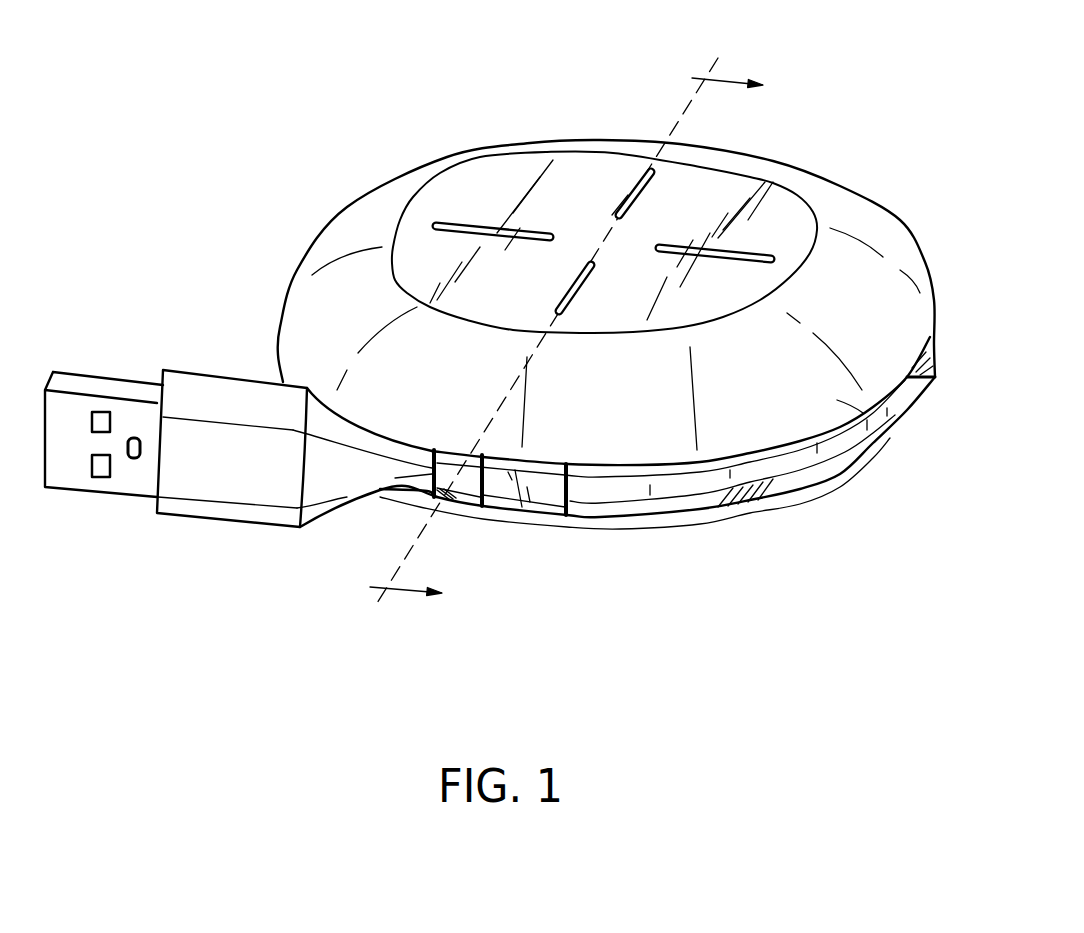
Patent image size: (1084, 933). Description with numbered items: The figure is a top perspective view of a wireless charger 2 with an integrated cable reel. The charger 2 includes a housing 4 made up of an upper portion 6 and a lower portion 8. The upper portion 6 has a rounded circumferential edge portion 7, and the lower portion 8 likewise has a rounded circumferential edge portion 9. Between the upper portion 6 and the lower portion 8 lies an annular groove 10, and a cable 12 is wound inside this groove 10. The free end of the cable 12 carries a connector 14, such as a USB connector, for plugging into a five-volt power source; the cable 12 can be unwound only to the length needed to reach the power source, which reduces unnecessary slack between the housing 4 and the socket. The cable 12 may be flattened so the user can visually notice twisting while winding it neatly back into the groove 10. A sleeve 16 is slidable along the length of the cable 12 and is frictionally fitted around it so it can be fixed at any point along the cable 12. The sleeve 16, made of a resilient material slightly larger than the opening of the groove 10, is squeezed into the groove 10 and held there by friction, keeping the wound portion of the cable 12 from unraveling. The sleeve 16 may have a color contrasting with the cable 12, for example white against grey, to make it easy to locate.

The charger 2 is at (893, 104).
The housing 4 is at (902, 233).
The upper portion 6 is at (862, 408).
The rounded circumferential edge portion 7 is at (370, 217).
The lower portion 8 is at (801, 502).
The rounded circumferential edge portion 9 is at (620, 528).
The annular groove 10 is at (705, 525).
The cable 12 is at (395, 480).
The connector 14 is at (102, 387).
The sleeve 16 is at (522, 518).